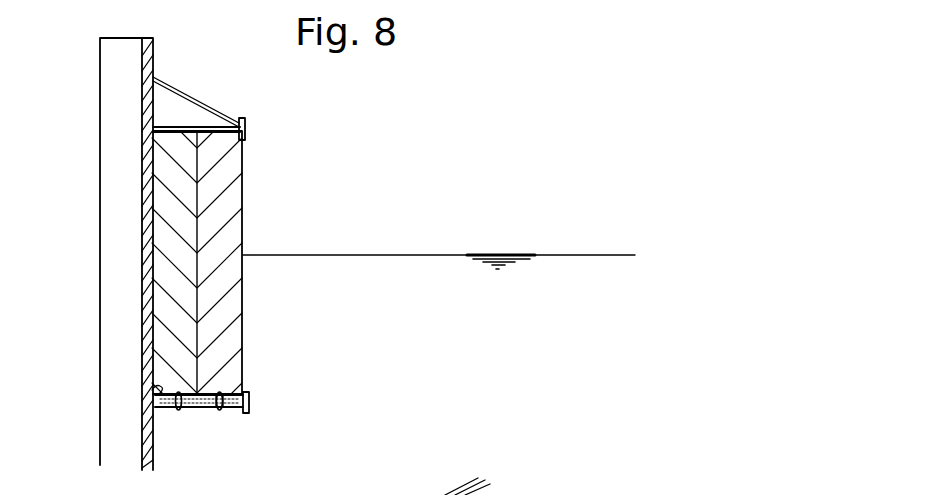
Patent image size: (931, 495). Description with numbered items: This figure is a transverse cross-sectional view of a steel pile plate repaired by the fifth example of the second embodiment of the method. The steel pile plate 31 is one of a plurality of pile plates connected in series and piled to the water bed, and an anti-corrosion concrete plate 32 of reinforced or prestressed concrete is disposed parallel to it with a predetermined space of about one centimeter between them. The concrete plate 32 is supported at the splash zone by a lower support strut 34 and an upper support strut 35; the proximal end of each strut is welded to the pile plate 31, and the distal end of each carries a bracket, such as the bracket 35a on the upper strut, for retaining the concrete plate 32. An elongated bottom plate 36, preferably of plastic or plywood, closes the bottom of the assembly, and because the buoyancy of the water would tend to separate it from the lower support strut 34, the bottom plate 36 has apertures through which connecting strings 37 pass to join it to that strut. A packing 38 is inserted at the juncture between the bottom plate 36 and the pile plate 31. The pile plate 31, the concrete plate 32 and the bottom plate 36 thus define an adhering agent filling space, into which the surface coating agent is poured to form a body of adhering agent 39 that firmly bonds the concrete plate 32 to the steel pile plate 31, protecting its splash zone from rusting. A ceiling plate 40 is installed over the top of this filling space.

The steel pile plate 31 is at (142, 227).
The anti-corrosion concrete plate 32 is at (243, 175).
The lower support strut 34 is at (249, 396).
The upper support strut 35 is at (200, 130).
The bracket 35a is at (246, 127).
The bottom plate 36 is at (190, 402).
The connecting string 37 is at (223, 408).
The packing 38 is at (167, 393).
The body of adhering agent 39 is at (168, 157).
The ceiling plate 40 is at (237, 101).